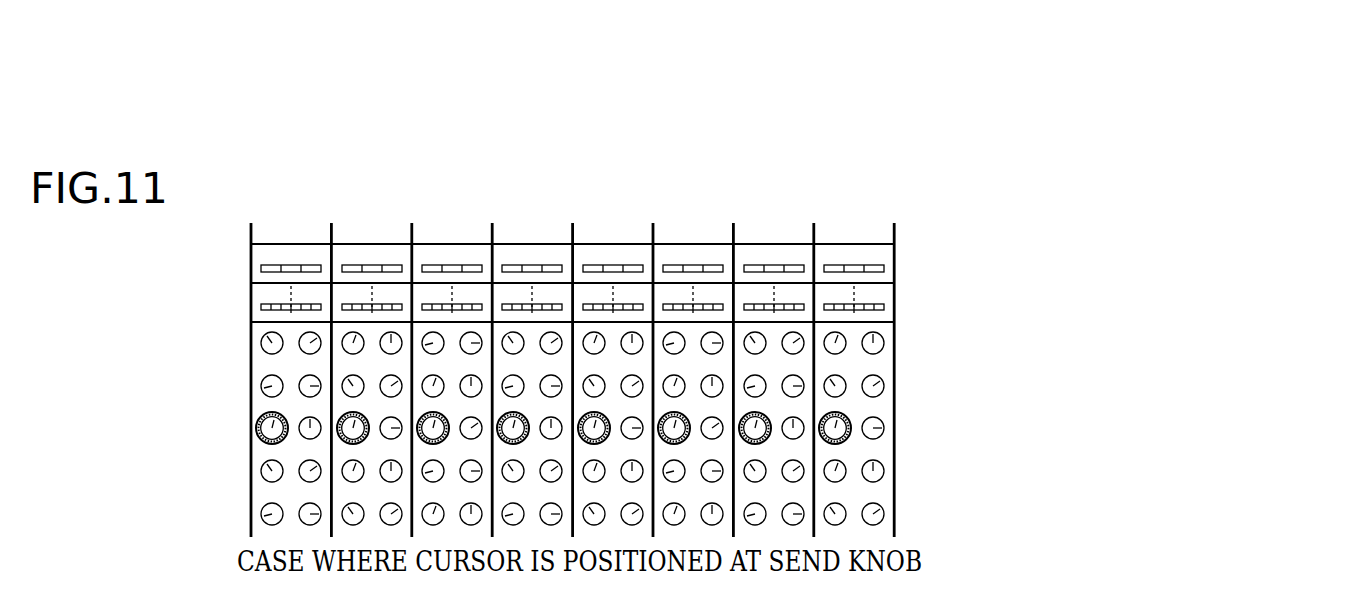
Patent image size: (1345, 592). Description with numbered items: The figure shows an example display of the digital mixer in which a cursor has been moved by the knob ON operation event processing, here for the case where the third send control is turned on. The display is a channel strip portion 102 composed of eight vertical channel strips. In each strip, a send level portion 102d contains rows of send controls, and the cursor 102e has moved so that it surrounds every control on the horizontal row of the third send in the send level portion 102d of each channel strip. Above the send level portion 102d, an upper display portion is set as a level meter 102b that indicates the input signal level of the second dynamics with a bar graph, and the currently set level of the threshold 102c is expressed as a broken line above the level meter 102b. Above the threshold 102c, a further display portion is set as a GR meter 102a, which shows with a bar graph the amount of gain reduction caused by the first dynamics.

The channel strip portion 102 is at (687, 232).
The GR meter 102a is at (878, 262).
The level meter 102b is at (883, 306).
The threshold 102c is at (855, 296).
The send level portion 102d is at (888, 376).
The cursor 102e is at (849, 419).